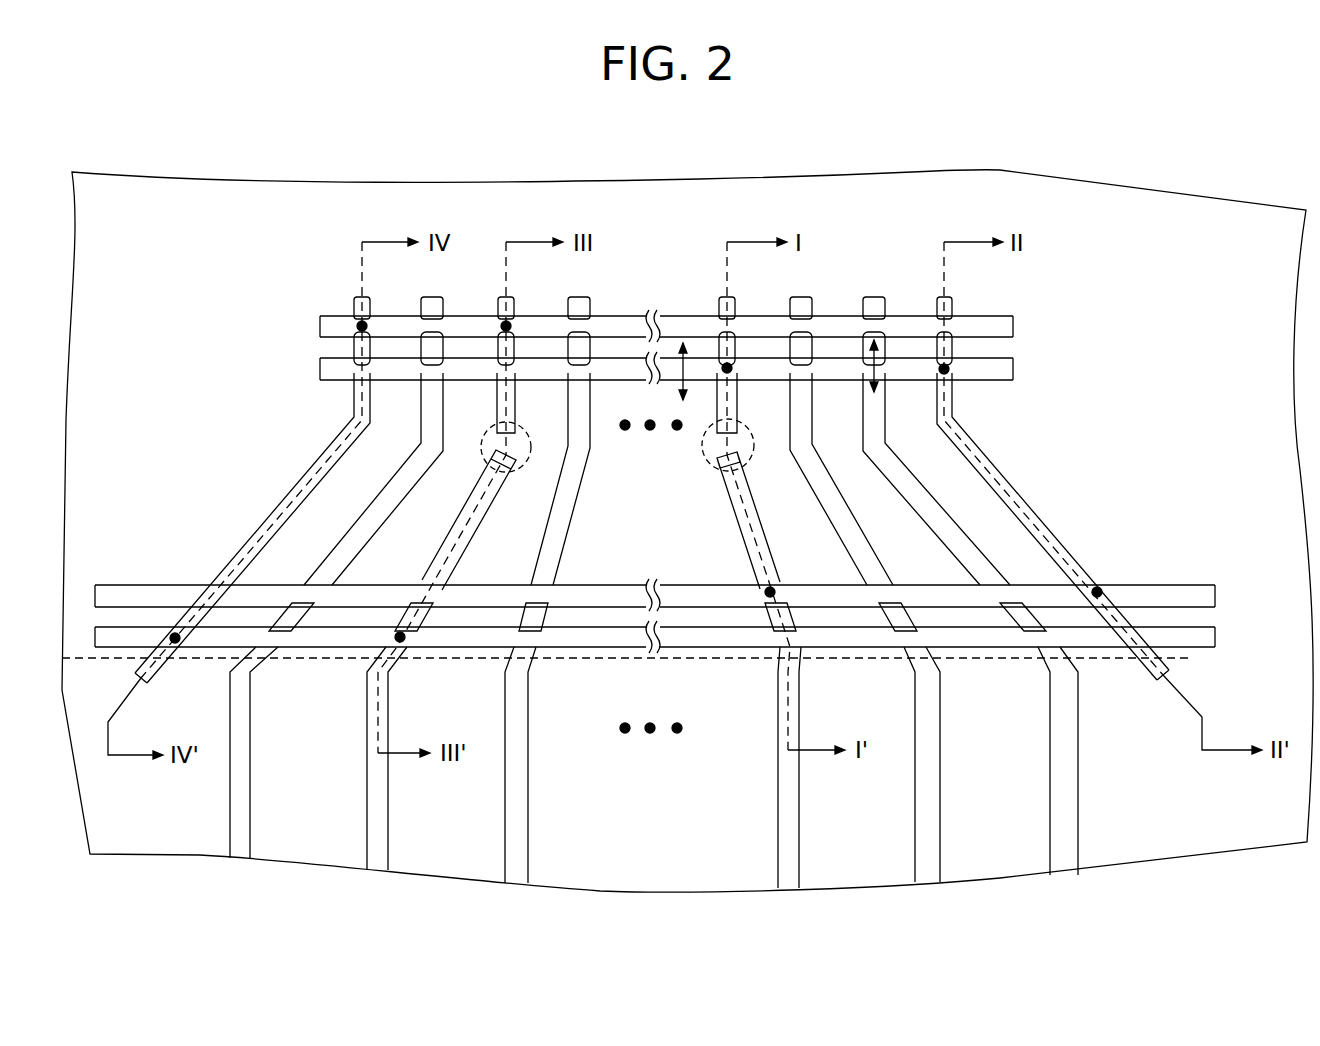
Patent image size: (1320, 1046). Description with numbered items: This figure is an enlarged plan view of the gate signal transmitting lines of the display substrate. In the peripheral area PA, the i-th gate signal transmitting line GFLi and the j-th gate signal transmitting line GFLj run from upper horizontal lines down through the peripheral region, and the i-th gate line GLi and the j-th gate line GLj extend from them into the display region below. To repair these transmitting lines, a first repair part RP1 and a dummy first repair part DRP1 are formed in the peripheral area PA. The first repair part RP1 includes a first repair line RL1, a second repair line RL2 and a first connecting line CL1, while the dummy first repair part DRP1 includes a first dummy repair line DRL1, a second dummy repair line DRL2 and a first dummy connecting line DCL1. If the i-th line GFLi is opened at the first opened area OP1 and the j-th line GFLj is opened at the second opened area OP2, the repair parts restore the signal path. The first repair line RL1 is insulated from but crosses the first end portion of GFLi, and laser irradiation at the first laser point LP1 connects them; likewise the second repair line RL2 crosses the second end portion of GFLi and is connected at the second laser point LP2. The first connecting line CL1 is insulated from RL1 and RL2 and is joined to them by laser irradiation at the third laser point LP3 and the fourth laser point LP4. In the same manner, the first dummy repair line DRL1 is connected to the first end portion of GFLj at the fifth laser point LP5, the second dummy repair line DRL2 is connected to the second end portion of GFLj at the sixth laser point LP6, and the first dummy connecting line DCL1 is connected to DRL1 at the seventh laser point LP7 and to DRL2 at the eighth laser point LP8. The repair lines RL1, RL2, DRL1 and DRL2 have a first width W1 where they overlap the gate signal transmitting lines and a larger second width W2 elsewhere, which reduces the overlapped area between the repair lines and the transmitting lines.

The peripheral area PA is at (112, 524).
The first dummy repair line DRL1 is at (320, 327).
The second dummy repair line DRL2 is at (150, 632).
The first repair line RL1 is at (1013, 368).
The second repair line RL2 is at (1188, 592).
The first dummy connecting line DCL1 is at (285, 498).
The first connecting line CL1 is at (1045, 530).
The dummy first repair part DRP1 is at (195, 390).
The first repair part RP1 is at (1190, 462).
The i-th gate signal transmitting line GFLi is at (745, 522).
The j-th gate signal transmitting line GFLj is at (455, 545).
The i-th gate line GLi is at (798, 838).
The j-th gate line GLj is at (380, 838).
The first laser point LP1 is at (736, 368).
The second laser point LP2 is at (773, 588).
The third laser point LP3 is at (953, 369).
The fourth laser point LP4 is at (1099, 589).
The fifth laser point LP5 is at (500, 323).
The sixth laser point LP6 is at (401, 645).
The seventh laser point LP7 is at (354, 316).
The eighth laser point LP8 is at (176, 645).
The first opened area OP1 is at (710, 462).
The second opened area OP2 is at (514, 473).
The first width W1 is at (870, 366).
The second width W2 is at (685, 346).